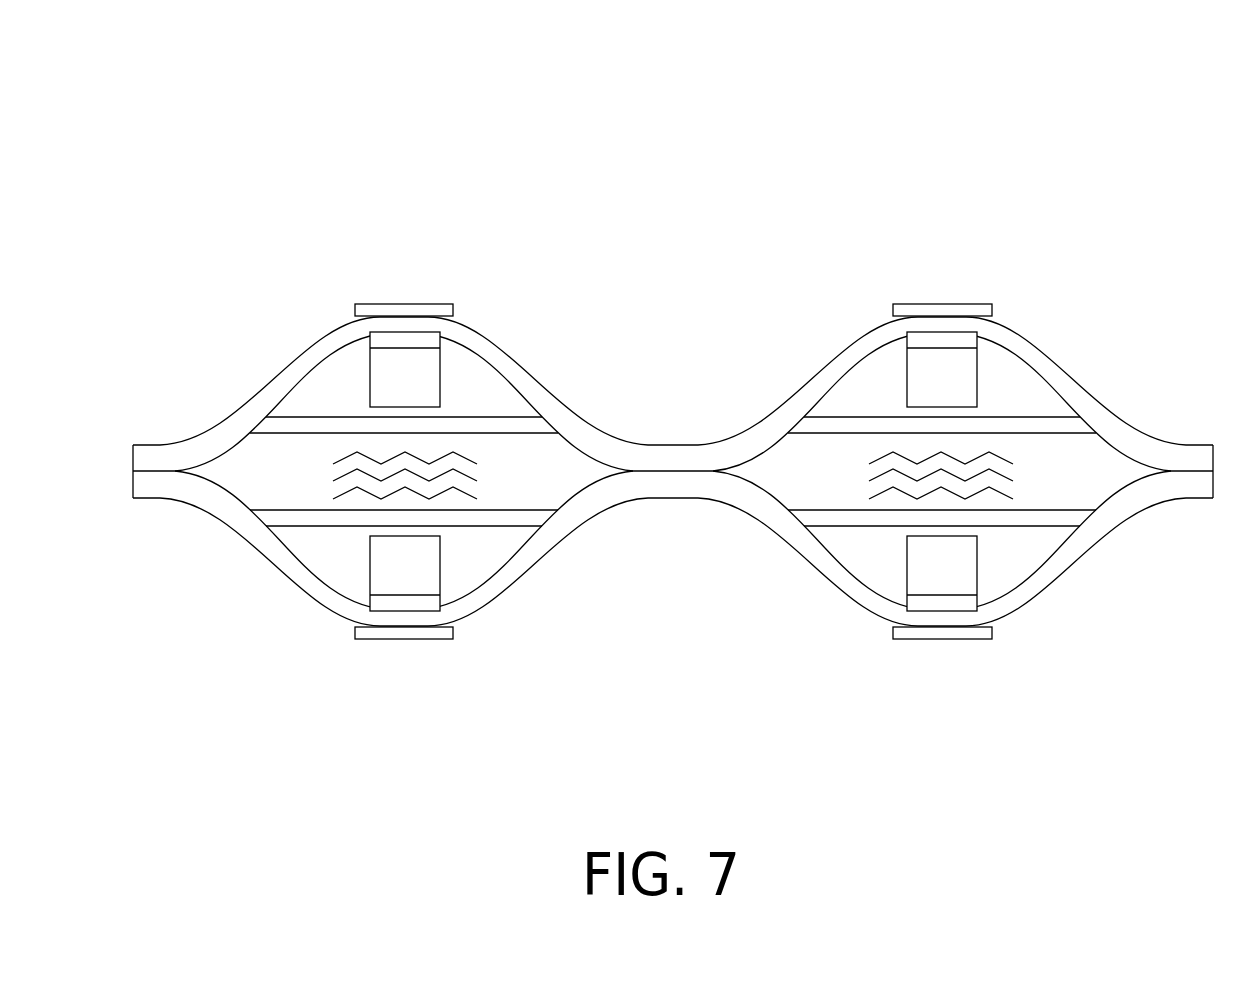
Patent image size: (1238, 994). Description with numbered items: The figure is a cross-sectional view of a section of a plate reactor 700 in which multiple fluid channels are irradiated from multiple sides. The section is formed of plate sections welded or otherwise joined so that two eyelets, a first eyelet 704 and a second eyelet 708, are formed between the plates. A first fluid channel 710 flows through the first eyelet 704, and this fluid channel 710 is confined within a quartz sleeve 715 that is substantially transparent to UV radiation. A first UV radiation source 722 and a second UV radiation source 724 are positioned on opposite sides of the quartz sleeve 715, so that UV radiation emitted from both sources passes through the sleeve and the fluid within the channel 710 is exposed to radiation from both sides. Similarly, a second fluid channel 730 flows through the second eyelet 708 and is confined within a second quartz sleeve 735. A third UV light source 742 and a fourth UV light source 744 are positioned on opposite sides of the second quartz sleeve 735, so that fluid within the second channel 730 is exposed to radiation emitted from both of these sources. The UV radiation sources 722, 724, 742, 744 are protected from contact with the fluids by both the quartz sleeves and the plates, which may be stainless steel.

The plate reactor 700 is at (348, 130).
The first eyelet 704 is at (313, 338).
The second eyelet 708 is at (927, 303).
The first fluid channel 710 is at (260, 477).
The quartz sleeve 715 is at (313, 415).
The first UV radiation source 722 is at (420, 367).
The second UV radiation source 724 is at (370, 560).
The second fluid channel 730 is at (1037, 467).
The second quartz sleeve 735 is at (1018, 527).
The third UV light source 742 is at (978, 340).
The fourth UV light source 744 is at (907, 562).